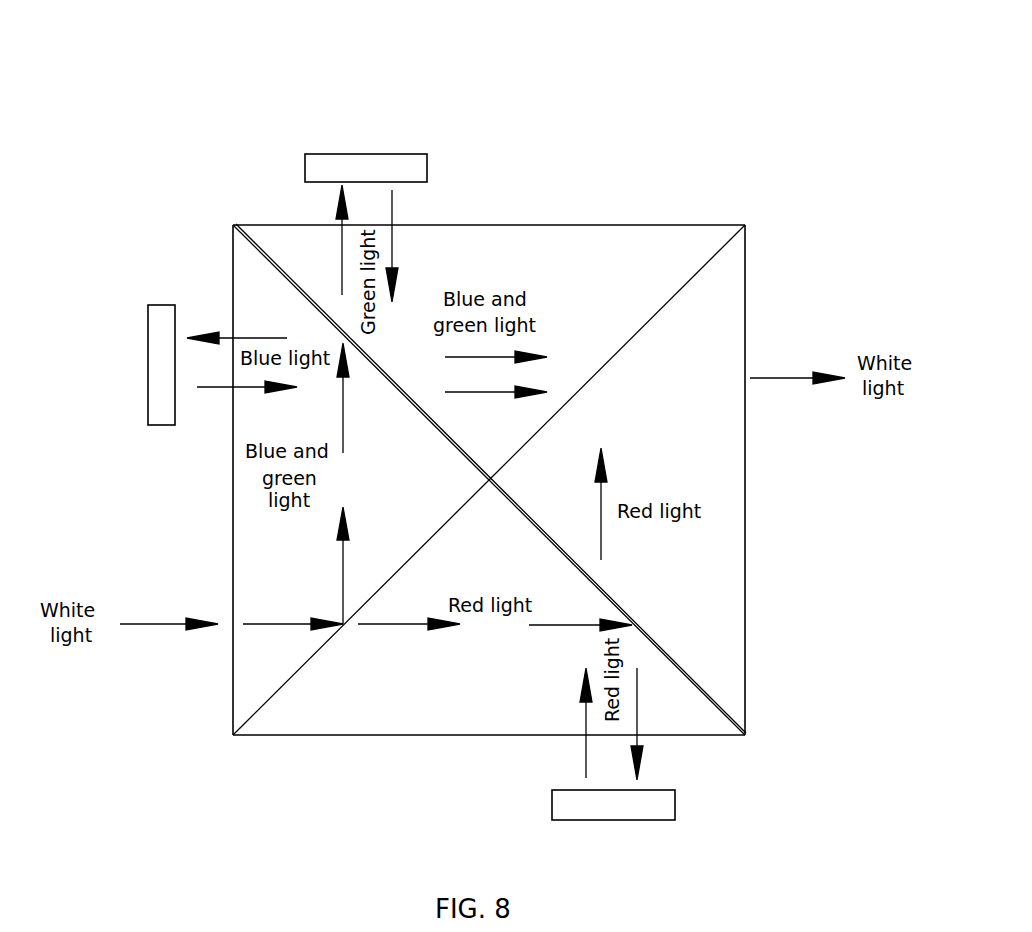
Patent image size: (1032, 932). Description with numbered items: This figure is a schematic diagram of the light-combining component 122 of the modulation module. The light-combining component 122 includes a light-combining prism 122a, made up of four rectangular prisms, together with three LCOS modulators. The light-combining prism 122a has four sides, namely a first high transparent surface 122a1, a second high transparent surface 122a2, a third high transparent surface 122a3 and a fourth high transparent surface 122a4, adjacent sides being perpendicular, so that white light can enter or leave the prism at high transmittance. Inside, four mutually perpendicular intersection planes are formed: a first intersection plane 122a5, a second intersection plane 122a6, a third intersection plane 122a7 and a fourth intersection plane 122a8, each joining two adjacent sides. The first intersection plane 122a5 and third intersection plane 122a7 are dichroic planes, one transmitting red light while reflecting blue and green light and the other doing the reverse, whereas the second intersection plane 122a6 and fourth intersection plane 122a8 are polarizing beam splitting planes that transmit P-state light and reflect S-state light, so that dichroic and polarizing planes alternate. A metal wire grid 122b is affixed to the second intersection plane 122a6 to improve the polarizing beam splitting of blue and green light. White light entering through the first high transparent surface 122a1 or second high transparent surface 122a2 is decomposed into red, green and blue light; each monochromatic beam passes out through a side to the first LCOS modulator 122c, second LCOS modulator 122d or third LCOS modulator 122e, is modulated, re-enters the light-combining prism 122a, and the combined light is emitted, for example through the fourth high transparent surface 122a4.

The light-combining component 122 is at (532, 24).
The light-combining prism 122a is at (745, 535).
The first high transparent surface 122a1 is at (488, 735).
The second high transparent surface 122a2 is at (232, 483).
The third high transparent surface 122a3 is at (485, 225).
The fourth high transparent surface 122a4 is at (747, 478).
The first intersection plane 122a5 is at (285, 686).
The second intersection plane 122a6 is at (268, 258).
The third intersection plane 122a7 is at (722, 248).
The fourth intersection plane 122a8 is at (705, 693).
The metal wire grid 122b is at (425, 423).
The first LCOS modulator 122c is at (675, 797).
The second LCOS modulator 122d is at (148, 365).
The third LCOS modulator 122e is at (365, 153).